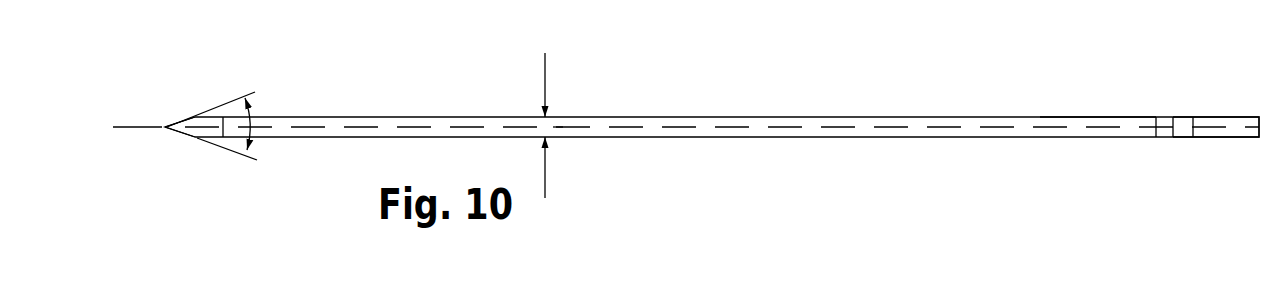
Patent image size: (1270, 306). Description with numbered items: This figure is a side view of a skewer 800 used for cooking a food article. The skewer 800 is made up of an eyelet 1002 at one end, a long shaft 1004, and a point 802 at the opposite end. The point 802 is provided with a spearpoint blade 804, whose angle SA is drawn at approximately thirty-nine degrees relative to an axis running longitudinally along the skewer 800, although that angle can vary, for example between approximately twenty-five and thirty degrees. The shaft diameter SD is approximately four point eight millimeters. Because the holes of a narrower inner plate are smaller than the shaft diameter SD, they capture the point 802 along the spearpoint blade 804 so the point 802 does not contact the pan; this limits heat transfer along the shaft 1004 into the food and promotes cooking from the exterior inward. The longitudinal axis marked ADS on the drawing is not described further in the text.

The skewer 800 is at (765, 112).
The point 802 is at (163, 125).
The spearpoint blade 804 is at (192, 116).
The eyelet 1002 is at (1190, 114).
The shaft 1004 is at (1042, 114).
The angle of the spearpoint blade SA is at (250, 127).
The active depth segment ADS is at (558, 127).
The shaft diameter SD is at (545, 198).